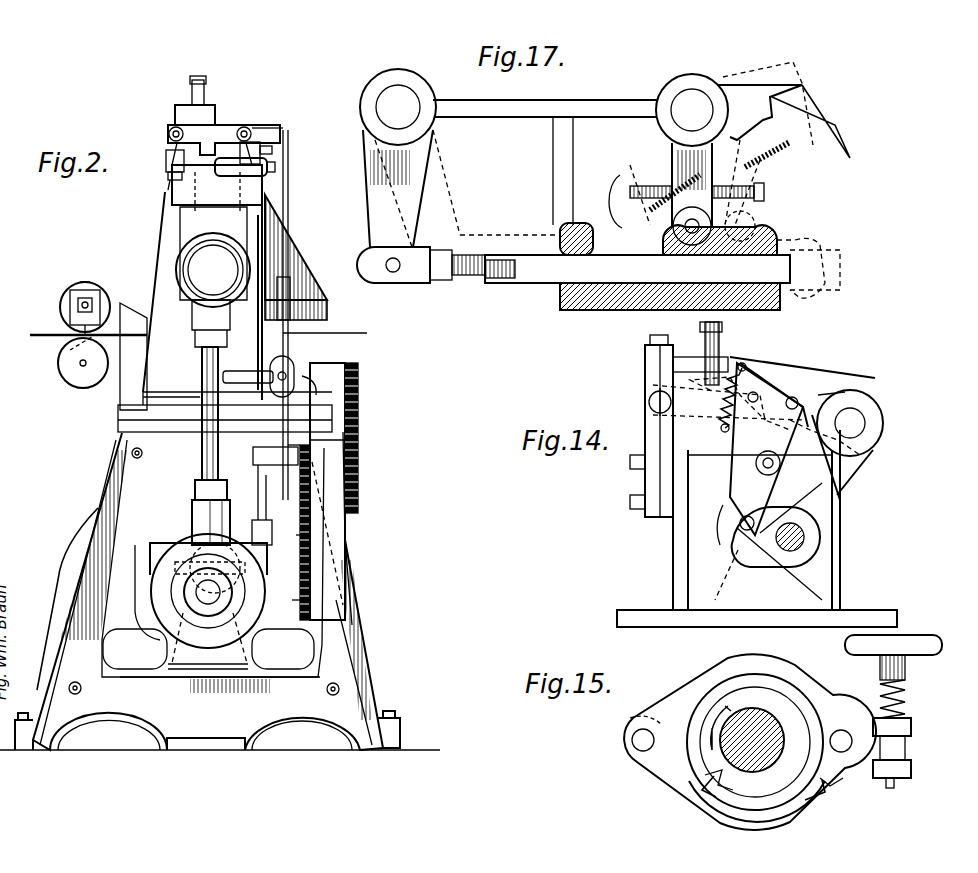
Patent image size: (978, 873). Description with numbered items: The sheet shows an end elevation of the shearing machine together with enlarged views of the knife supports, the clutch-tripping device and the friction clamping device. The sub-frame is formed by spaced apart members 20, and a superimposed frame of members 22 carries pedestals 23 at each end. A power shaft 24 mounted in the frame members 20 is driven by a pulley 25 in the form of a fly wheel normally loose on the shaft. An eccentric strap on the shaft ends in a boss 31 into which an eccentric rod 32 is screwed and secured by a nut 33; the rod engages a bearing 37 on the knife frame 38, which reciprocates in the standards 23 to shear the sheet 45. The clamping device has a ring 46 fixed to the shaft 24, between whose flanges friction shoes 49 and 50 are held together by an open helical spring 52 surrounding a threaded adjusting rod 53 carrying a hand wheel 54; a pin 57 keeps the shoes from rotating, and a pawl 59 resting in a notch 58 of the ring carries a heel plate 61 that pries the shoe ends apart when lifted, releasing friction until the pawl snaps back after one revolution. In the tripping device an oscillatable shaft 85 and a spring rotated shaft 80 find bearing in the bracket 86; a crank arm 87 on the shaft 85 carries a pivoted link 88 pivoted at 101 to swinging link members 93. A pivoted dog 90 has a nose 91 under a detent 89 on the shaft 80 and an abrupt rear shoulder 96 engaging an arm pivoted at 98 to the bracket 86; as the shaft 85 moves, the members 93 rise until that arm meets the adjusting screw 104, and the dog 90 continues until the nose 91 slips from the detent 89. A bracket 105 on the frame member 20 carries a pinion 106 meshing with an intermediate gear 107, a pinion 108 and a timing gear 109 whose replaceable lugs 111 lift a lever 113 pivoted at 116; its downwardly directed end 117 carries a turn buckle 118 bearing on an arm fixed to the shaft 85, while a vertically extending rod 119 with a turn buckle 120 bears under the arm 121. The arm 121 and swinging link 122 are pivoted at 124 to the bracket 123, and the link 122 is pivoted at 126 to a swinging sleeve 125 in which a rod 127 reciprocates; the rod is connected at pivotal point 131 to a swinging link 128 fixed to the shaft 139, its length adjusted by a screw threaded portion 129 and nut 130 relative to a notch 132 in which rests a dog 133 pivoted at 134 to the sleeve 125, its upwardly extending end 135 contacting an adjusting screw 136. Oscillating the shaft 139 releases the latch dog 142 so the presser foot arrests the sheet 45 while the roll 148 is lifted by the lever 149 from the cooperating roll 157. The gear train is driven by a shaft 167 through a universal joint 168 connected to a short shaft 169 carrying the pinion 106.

In FIG. 2, the sub-frame members 20 is at (352, 648).
In FIG. 2, the superimposed frame members 22 is at (118, 418).
In FIG. 2, the pedestals 23 is at (158, 280).
In FIG. 2, the power shaft 24 is at (210, 605).
In FIG. 15, the power shaft 24 is at (768, 735).
In FIG. 2, the pulley 25 is at (78, 530).
In FIG. 2, the boss 31 is at (192, 510).
In FIG. 2, the eccentric rod 32 is at (202, 360).
In FIG. 2, the nut 33 is at (195, 489).
In FIG. 2, the bearing 37 is at (213, 290).
In FIG. 2, the knife frame 38 is at (300, 265).
In FIG. 2, the sheet 45 is at (358, 330).
In FIG. 15, the ring 46 is at (765, 697).
In FIG. 15, the friction shoe 49 is at (712, 672).
In FIG. 15, the friction shoe 50 is at (696, 793).
In FIG. 15, the open helical spring 52 is at (905, 690).
In FIG. 15, the adjusting rod 53 is at (896, 786).
In FIG. 15, the hand wheel 54 is at (925, 635).
In FIG. 15, the pin 57 is at (632, 742).
In FIG. 15, the notch 58 is at (705, 777).
In FIG. 15, the pawl 59 is at (838, 790).
In FIG. 15, the heel plate 61 is at (905, 748).
In FIG. 14, the spring rotated shaft 80 is at (850, 423).
In FIG. 2, the oscillatable shaft 85 is at (195, 547).
In FIG. 14, the oscillatable shaft 85 is at (800, 533).
In FIG. 14, the bracket 86 is at (840, 575).
In FIG. 14, the crank arm 87 is at (755, 545).
In FIG. 14, the pivoted link 88 is at (752, 484).
In FIG. 14, the detent 89 is at (835, 395).
In FIG. 14, the pivoted dog 90 is at (775, 380).
In FIG. 14, the nose 91 is at (873, 442).
In FIG. 14, the swinging link members 93 is at (718, 430).
In FIG. 14, the rear shoulder 96 is at (860, 462).
In FIG. 14, the pivot 98 is at (650, 402).
In FIG. 14, the pivot 101 is at (780, 465).
In FIG. 14, the adjusting screw 104 is at (722, 330).
In FIG. 2, the bracket 105 is at (345, 522).
In FIG. 2, the pinion 106 is at (358, 380).
In FIG. 2, the intermediate gear 107 is at (312, 452).
In FIG. 2, the pinion 108 is at (312, 447).
In FIG. 2, the timing gear 109 is at (310, 545).
In FIG. 2, the replaceable lugs 111 is at (310, 598).
In FIG. 2, the lever 113 is at (312, 457).
In FIG. 2, the pivot 116 is at (272, 447).
In FIG. 2, the lever end 117 is at (312, 503).
In FIG. 2, the turn buckle 118 is at (258, 505).
In FIG. 2, the vertically extending rod 119 is at (343, 585).
In FIG. 2, the turn buckle 120 is at (314, 305).
In FIG. 2, the arm 121 is at (268, 128).
In FIG. 17, the arm 121 is at (775, 85).
In FIG. 2, the swinging link 122 is at (260, 146).
In FIG. 17, the swinging link 122 is at (718, 160).
In FIG. 2, the bracket 123 is at (215, 205).
In FIG. 17, the bracket 123 is at (598, 100).
In FIG. 17, the pivot 124 is at (690, 100).
In FIG. 2, the swinging sleeve 125 is at (275, 166).
In FIG. 17, the swinging sleeve 125 is at (820, 228).
In FIG. 17, the pivot 126 is at (712, 222).
In FIG. 2, the rod 127 is at (217, 188).
In FIG. 17, the rod 127 is at (790, 264).
In FIG. 2, the swinging link 128 is at (166, 165).
In FIG. 17, the swinging link 128 is at (460, 192).
In FIG. 17, the screw threaded portion 129 is at (470, 275).
In FIG. 17, the nut 130 is at (440, 280).
In FIG. 2, the pivotal point 131 is at (168, 178).
In FIG. 17, the pivotal point 131 is at (393, 272).
In FIG. 17, the notch 132 is at (720, 249).
In FIG. 17, the dog 133 is at (637, 282).
In FIG. 17, the pivot 134 is at (565, 228).
In FIG. 17, the upwardly extending end 135 is at (620, 178).
In FIG. 17, the adjusting screw 136 is at (790, 150).
In FIG. 2, the shaft 139 is at (169, 136).
In FIG. 17, the shaft 139 is at (400, 98).
In FIG. 2, the latch dog 142 is at (175, 115).
In FIG. 2, the roll 148 is at (82, 283).
In FIG. 2, the lever 149 is at (132, 318).
In FIG. 2, the roll 157 is at (58, 372).
In FIG. 2, the shaft 167 is at (238, 371).
In FIG. 2, the universal joint 168 is at (270, 368).
In FIG. 2, the short shaft 169 is at (323, 391).